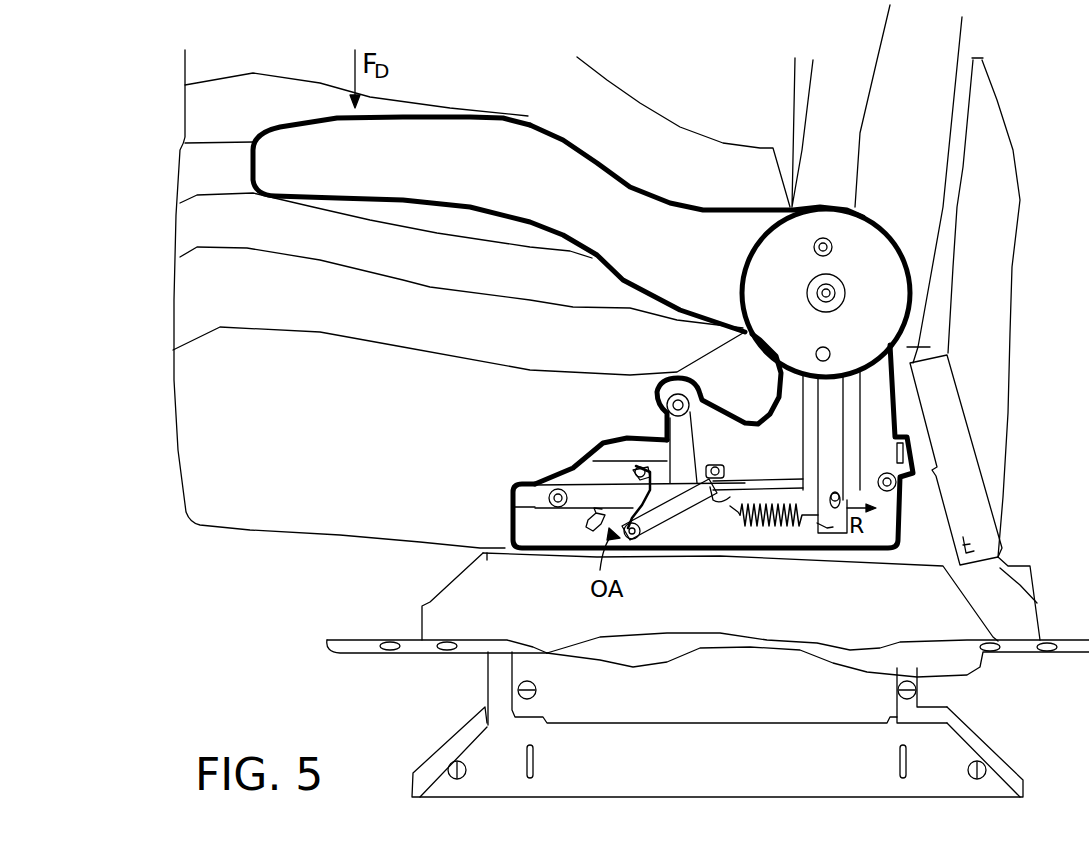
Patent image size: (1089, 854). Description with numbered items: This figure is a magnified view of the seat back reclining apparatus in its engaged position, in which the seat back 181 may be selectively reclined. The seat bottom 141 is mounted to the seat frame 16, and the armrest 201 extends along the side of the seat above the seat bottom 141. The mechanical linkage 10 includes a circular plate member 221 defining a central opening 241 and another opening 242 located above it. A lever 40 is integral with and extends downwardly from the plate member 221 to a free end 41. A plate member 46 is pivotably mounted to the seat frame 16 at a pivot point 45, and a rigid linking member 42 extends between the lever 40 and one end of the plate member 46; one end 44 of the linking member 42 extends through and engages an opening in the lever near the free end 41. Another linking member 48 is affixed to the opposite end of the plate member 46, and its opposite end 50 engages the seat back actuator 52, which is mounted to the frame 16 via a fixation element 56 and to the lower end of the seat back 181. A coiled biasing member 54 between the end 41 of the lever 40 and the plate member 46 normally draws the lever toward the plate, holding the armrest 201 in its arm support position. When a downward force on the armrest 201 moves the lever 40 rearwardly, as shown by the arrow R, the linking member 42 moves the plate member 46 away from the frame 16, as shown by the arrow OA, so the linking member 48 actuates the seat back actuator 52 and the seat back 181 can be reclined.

The mechanical linkage 10 is at (950, 393).
The seat bottom 141 is at (376, 424).
The seat frame 16 is at (542, 555).
The seat back 181 is at (962, 28).
The armrest 201 is at (403, 172).
The plate member 221 is at (913, 306).
The opening 241 is at (834, 294).
The opening 242 is at (823, 238).
The lever 40 is at (847, 435).
The free end 41 is at (840, 535).
The linking member 42 is at (777, 482).
The end of linking member 44 is at (840, 500).
The pivot point 45 is at (713, 465).
The plate member 46 is at (687, 533).
The linking member 48 is at (645, 505).
The opposite end 50 is at (636, 466).
The seat back actuator 52 is at (590, 480).
The biasing member 54 is at (777, 530).
The fixation element 56 is at (587, 527).